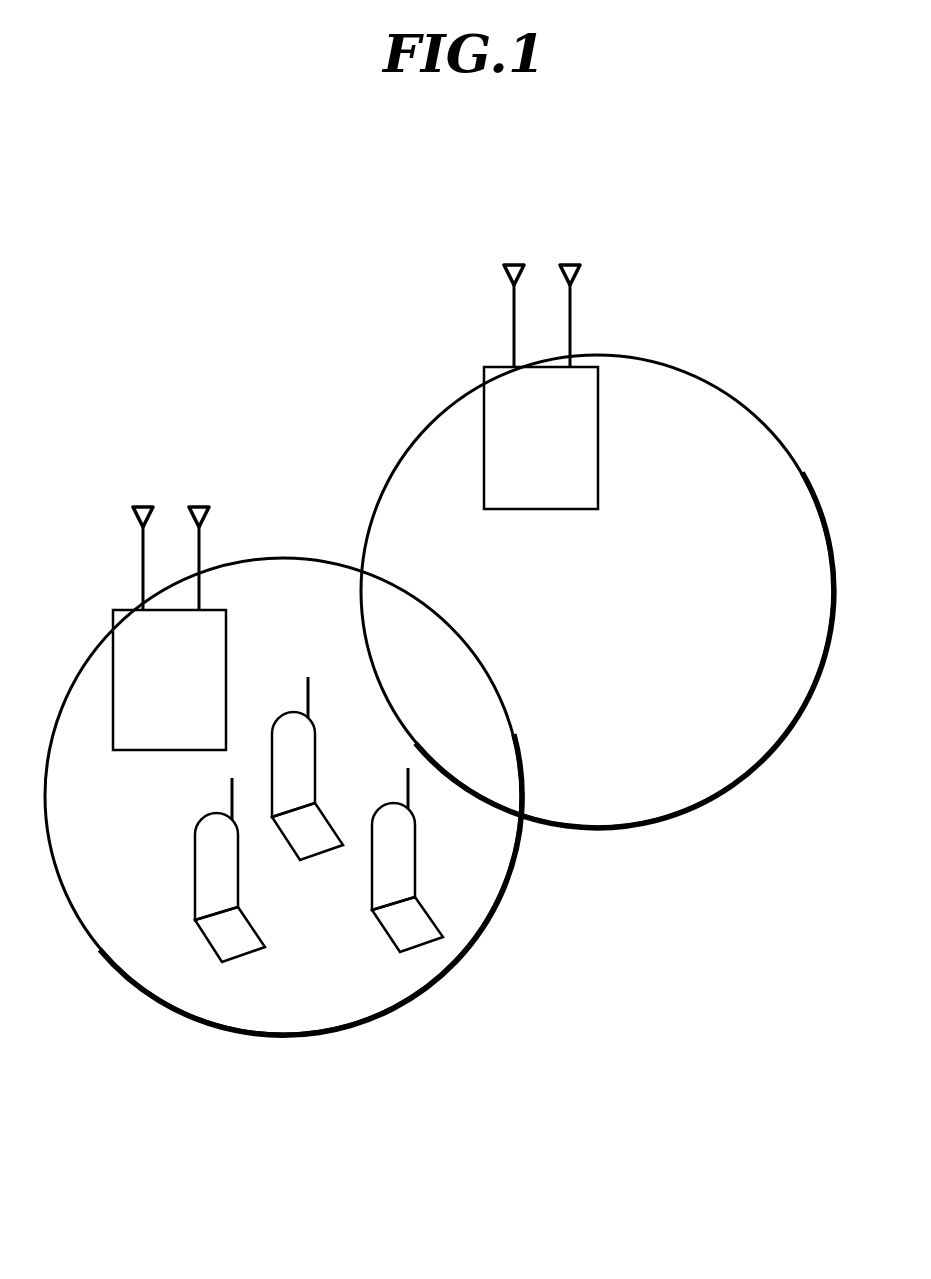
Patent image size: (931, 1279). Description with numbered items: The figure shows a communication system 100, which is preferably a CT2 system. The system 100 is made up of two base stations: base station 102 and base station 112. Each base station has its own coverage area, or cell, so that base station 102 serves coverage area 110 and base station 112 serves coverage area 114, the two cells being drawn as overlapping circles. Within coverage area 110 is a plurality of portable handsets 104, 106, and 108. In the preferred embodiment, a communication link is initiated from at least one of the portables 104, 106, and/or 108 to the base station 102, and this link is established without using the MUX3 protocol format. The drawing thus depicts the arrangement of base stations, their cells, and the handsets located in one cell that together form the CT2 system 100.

The communication system 100 is at (218, 1163).
The base station 102 is at (169, 628).
The handset 104 is at (230, 870).
The handset 106 is at (307, 768).
The handset 108 is at (407, 860).
The coverage area 110 is at (143, 988).
The base station 112 is at (541, 387).
The coverage area 114 is at (720, 800).